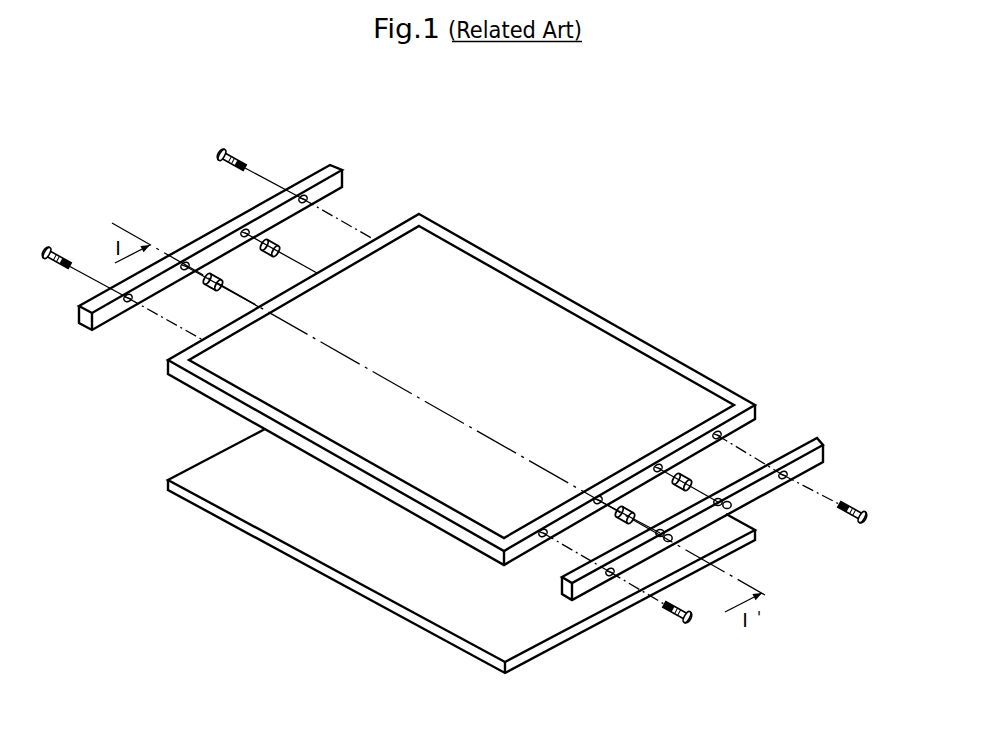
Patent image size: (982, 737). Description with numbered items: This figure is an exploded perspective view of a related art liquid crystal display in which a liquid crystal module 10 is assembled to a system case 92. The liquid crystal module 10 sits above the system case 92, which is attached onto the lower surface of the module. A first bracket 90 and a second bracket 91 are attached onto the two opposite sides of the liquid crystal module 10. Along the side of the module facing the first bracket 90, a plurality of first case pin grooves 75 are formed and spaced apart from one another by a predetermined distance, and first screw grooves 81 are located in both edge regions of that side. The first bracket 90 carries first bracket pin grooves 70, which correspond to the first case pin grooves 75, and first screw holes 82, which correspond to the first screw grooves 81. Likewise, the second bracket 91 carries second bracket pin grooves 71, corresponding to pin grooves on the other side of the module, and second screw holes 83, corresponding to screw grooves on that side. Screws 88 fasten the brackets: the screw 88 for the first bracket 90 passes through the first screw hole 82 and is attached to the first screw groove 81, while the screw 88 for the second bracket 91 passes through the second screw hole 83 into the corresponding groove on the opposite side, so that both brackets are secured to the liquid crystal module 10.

The liquid crystal module 10 is at (593, 263).
The first bracket pin grooves 70 is at (670, 542).
The second bracket pin grooves 71 is at (244, 236).
The first case pin grooves 75 is at (663, 468).
The first screw grooves 81 is at (722, 436).
The first screw holes 82 is at (789, 480).
The second screw holes 83 is at (309, 199).
The screws 88 is at (219, 151).
The first bracket 90 is at (817, 438).
The second bracket 91 is at (330, 169).
The system case 92 is at (352, 545).